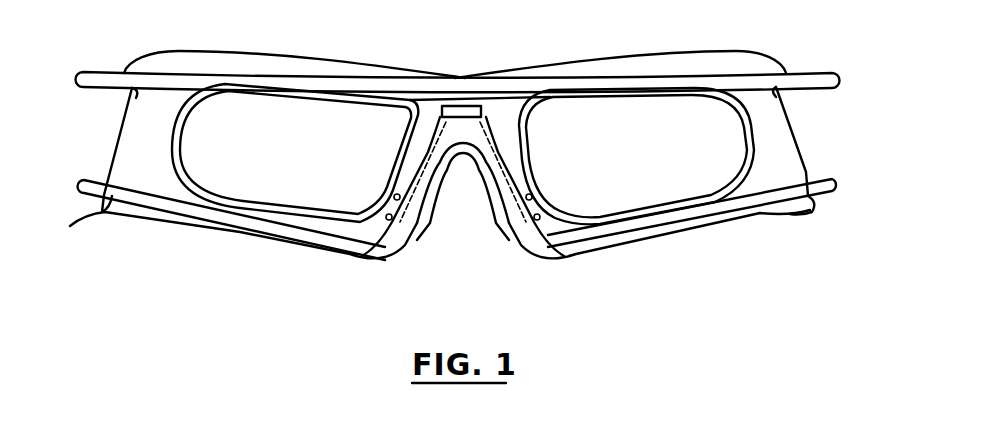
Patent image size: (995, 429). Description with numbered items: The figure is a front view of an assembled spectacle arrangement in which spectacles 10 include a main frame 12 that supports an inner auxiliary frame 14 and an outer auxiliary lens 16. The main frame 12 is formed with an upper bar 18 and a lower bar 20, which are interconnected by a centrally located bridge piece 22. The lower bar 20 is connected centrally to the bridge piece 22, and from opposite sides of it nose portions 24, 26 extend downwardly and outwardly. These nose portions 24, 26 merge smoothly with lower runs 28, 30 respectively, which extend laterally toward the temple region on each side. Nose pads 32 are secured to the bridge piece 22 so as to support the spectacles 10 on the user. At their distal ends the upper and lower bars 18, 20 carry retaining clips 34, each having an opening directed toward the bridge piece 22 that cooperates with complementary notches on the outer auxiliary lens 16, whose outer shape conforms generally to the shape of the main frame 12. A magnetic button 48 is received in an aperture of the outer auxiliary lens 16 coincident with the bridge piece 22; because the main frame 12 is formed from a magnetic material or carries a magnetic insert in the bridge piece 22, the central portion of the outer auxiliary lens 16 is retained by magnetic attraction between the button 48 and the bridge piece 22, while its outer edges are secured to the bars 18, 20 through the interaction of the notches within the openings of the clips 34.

The spectacles 10 is at (190, 258).
The main frame 12 is at (116, 72).
The inner auxiliary frame 14 is at (170, 138).
The outer auxiliary lens 16 is at (398, 248).
The upper bar 18 is at (312, 75).
The lower bar 20 is at (216, 224).
The bridge piece 22 is at (418, 100).
The nose portion 24 is at (430, 159).
The nose portion 26 is at (545, 253).
The lower run 28 is at (152, 217).
The lower run 30 is at (756, 220).
The nose pads 32 is at (367, 241).
The retaining clips 34 is at (125, 112).
The magnetic button 48 is at (468, 76).